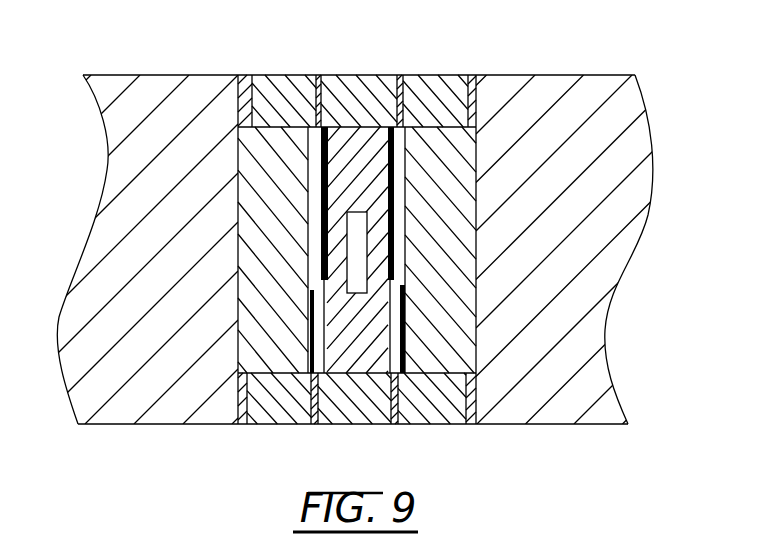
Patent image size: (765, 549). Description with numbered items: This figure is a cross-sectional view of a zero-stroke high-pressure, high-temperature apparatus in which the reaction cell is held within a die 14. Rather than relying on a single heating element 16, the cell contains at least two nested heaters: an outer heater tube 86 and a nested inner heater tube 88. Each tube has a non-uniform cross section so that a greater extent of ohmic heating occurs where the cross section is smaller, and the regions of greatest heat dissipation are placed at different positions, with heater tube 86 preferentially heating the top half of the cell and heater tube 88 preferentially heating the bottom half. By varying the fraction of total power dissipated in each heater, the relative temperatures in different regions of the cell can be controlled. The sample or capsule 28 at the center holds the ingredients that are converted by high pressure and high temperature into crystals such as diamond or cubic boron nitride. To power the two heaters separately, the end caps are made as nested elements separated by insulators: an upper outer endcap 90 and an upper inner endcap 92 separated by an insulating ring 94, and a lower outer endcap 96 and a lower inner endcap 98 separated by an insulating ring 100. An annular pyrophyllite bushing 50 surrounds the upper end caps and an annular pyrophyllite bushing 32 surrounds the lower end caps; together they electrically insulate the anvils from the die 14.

The die 14 is at (88, 248).
The heating element 16 is at (642, 155).
The sample or capsule 28 is at (355, 225).
The annular pyrophyllite bushing 32 is at (472, 420).
The annular pyrophyllite bushing 50 is at (243, 85).
The heater tube 86 is at (310, 317).
The inner heater tube 88 is at (405, 187).
The upper outer endcap 90 is at (290, 88).
The upper inner endcap 92 is at (355, 87).
The insulating ring 94 is at (317, 88).
The lower outer endcap 96 is at (287, 413).
The lower inner endcap 98 is at (365, 417).
The insulating ring 100 is at (397, 413).